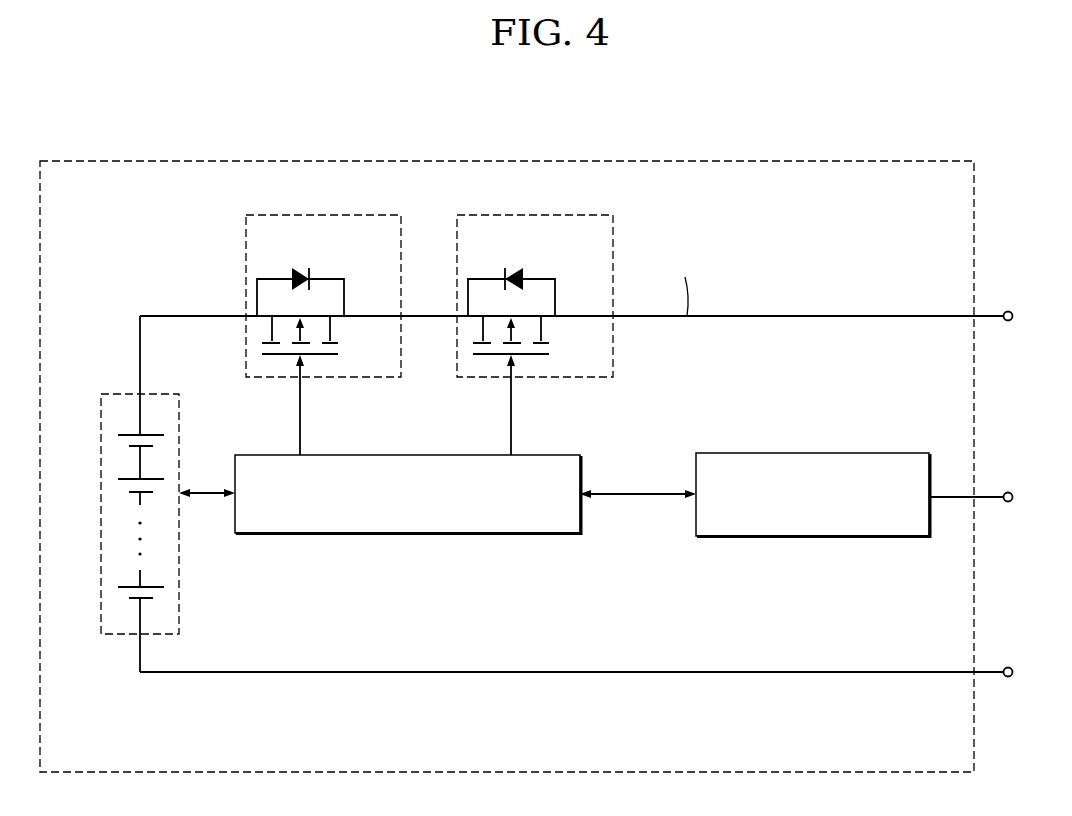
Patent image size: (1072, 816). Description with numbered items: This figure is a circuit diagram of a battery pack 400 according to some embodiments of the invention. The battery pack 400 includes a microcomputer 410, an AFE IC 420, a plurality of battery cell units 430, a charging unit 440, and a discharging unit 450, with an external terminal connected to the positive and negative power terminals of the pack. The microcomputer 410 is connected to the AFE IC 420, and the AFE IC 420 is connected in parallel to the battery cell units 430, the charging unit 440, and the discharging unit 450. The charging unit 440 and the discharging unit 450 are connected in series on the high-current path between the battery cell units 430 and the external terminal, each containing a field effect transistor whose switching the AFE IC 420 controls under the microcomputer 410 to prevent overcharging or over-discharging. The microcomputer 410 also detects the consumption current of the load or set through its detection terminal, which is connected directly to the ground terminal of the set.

The battery pack 400 is at (520, 161).
The microcomputer 410 is at (848, 452).
The AFE IC 420 is at (387, 453).
The battery cell units 430 is at (117, 393).
The charging unit 440 is at (325, 213).
The discharging unit 450 is at (536, 213).